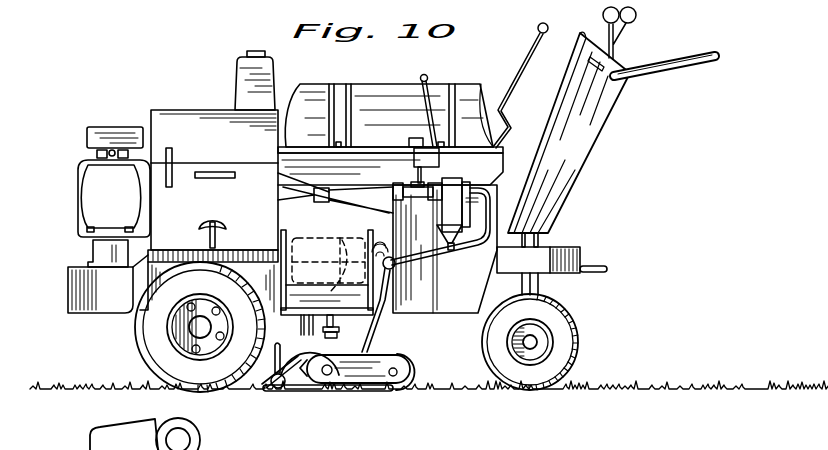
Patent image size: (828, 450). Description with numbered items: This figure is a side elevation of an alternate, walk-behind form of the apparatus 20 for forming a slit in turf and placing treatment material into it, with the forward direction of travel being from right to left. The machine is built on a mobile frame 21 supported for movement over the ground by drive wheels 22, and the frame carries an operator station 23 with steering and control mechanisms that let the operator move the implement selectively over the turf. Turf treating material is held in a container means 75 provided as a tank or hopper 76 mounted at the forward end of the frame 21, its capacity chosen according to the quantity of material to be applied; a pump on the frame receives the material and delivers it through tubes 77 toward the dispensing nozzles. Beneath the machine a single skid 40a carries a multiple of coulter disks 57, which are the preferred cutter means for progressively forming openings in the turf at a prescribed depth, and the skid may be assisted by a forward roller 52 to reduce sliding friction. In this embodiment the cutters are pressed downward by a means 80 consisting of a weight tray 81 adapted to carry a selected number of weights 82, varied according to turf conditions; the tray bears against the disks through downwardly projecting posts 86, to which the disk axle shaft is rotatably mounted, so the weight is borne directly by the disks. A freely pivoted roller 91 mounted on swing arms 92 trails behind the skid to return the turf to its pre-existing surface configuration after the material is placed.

The apparatus 20 is at (205, 76).
The mobile frame 21 is at (422, 313).
The drive wheels 22 is at (147, 342).
The operator station 23 is at (655, 103).
The single skid 40a is at (371, 395).
The forward roller 52 is at (325, 392).
The coulter disks 57 is at (340, 388).
The container means 75 is at (401, 81).
The tank or hopper 76 is at (374, 96).
The tubes 77 is at (436, 262).
The means for pressing 80 is at (353, 231).
The weight tray 81 is at (352, 314).
The weights 82 is at (328, 280).
The posts 86 is at (300, 329).
The roller 91 is at (413, 363).
The swing arms 92 is at (383, 386).